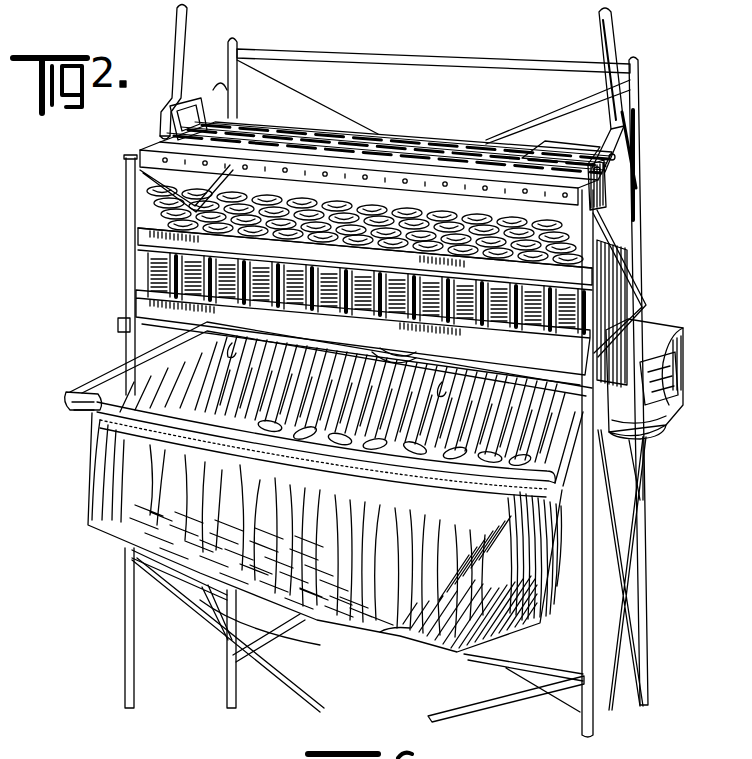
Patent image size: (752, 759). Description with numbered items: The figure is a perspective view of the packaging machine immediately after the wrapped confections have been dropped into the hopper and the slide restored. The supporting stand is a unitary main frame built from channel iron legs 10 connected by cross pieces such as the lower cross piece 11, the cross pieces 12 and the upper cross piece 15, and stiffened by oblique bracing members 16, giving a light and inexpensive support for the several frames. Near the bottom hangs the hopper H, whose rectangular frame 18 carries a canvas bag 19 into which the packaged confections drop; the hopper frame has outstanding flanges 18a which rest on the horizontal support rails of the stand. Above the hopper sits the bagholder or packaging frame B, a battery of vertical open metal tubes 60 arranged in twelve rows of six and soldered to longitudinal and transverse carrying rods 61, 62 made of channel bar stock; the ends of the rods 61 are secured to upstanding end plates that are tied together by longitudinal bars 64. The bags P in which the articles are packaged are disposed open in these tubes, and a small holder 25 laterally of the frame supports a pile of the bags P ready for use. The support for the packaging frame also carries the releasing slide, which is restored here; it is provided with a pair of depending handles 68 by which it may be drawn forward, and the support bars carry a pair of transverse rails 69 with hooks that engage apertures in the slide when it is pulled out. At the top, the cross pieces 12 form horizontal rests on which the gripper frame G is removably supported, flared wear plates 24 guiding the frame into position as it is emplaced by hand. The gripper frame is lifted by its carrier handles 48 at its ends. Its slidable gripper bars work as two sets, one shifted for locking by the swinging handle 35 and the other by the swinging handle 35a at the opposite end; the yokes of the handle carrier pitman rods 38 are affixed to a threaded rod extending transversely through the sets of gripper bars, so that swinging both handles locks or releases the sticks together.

The swinging handle 35a is at (178, 36).
The flared wear plate 24 is at (213, 90).
The carrier handle 48 is at (198, 106).
The cross piece 15 is at (421, 60).
The gripper frame G is at (440, 132).
The pitman rod 38 is at (574, 152).
The swinging handle 35 is at (614, 22).
The cross piece 12 is at (150, 182).
The longitudinal bar 64 is at (143, 227).
The transverse carrying rod 62 is at (143, 245).
The bagholder frame B is at (150, 264).
The longitudinal carrying rod 61 is at (143, 293).
The rectangular frame 18 is at (110, 365).
The transverse rail 69 is at (232, 345).
The vertical open metal tube 60 is at (363, 351).
The bag P is at (350, 437).
The depending handle 68 is at (403, 368).
The outstanding flange 18a is at (107, 424).
The holder 25 is at (684, 378).
The hopper H is at (93, 489).
The channel iron leg 10 is at (125, 650).
The bag 19 is at (398, 624).
The cross piece 11 is at (501, 668).
The oblique bracing member 16 is at (622, 648).